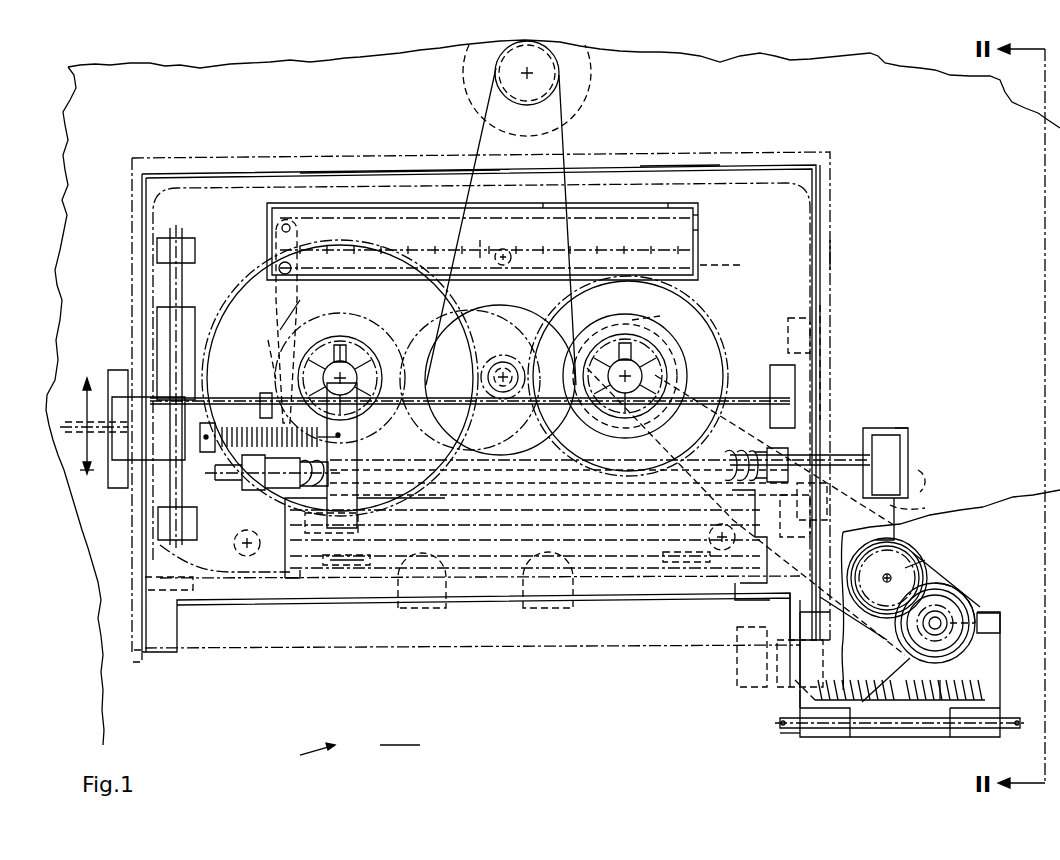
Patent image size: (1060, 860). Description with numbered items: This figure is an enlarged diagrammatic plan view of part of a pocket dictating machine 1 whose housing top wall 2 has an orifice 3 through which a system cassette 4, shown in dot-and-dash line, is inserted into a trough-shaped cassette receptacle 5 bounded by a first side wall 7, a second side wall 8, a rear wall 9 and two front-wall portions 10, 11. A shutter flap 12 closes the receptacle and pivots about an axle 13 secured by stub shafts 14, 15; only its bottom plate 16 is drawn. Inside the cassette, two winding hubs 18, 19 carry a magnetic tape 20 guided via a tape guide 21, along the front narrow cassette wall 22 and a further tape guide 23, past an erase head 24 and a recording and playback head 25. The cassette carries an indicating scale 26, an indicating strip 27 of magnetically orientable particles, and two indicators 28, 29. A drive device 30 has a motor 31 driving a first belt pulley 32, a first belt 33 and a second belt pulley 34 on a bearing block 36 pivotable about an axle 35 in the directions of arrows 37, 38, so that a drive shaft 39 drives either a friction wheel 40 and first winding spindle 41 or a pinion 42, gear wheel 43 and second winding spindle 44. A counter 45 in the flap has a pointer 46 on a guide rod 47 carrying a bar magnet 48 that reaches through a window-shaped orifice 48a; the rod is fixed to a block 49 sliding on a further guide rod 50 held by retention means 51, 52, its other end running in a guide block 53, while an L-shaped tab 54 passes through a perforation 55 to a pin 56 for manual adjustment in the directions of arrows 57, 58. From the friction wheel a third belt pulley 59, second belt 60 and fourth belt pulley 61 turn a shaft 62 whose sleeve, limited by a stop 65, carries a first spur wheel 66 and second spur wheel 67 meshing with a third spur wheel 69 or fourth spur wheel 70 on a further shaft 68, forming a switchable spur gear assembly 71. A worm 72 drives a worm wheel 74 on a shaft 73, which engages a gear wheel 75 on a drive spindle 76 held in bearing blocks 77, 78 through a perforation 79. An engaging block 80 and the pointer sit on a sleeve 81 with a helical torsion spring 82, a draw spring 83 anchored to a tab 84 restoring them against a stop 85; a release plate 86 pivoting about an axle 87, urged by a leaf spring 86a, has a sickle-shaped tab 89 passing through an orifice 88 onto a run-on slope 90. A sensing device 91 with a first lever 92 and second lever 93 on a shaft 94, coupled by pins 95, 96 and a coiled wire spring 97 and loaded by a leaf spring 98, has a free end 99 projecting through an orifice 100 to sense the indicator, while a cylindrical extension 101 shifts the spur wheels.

The pocket dictating machine 1 is at (307, 760).
The housing top wall 2 is at (400, 760).
The orifice 3 is at (774, 168).
The system cassette 4 is at (803, 184).
The cassette receptacle 5 is at (833, 207).
The first side wall 7 is at (134, 182).
The second side wall 8 is at (826, 255).
The rear wall 9 is at (676, 162).
The front-wall portion 10 is at (190, 605).
The front-wall portion 11 is at (783, 640).
The shutter flap 12 is at (182, 176).
The axle 13 is at (250, 650).
The stub shaft 14 is at (134, 655).
The stub shaft 15 is at (796, 688).
The bottom plate 16 is at (645, 166).
The winding hub 18 is at (365, 314).
The winding hub 19 is at (640, 312).
The magnetic tape 20 is at (478, 604).
The tape guide 21 is at (244, 558).
The front narrow cassette wall 22 is at (360, 580).
The tape guide 23 is at (716, 552).
The erase head 24 is at (400, 610).
The recording and playback head 25 is at (530, 610).
The indicating scale 26 is at (693, 229).
The indicating strip 27 is at (694, 218).
The indicator 28 is at (783, 515).
The indicator 29 is at (160, 547).
The drive device 30 is at (572, 134).
The motor 31 is at (465, 65).
The first belt pulley 32 is at (490, 80).
The first belt 33 is at (478, 140).
The second belt pulley 34 is at (417, 366).
The axle 35 is at (488, 256).
The bearing block 36 is at (510, 250).
The arrow 37 is at (569, 362).
The arrow 38 is at (432, 365).
The drive shaft 39 is at (515, 388).
The friction wheel 40 is at (506, 394).
The first winding spindle 41 is at (576, 325).
The pinion 42 is at (504, 352).
The gear wheel 43 is at (478, 413).
The second winding spindle 44 is at (372, 370).
The counter 45 is at (251, 418).
The pointer 46 is at (297, 307).
The guide rod 47 is at (420, 408).
The bar magnet 48 is at (292, 231).
The window-shaped orifice 48a is at (720, 257).
The block 49 is at (158, 322).
The further guide rod 50 is at (168, 272).
The retention means 51 is at (200, 532).
The retention means 52 is at (158, 246).
The guide block 53 is at (774, 362).
The tab 54 is at (133, 482).
The perforation 55 is at (126, 370).
The pin 56 is at (91, 412).
The arrow 57 is at (84, 488).
The arrow 58 is at (79, 412).
The third belt pulley 59 is at (596, 298).
The second belt 60 is at (695, 350).
The fourth belt pulley 61 is at (1000, 675).
The shaft 62 is at (950, 617).
The stop 65 is at (990, 634).
The first spur wheel 66 is at (886, 677).
The second spur wheel 67 is at (962, 597).
The further shaft 68 is at (887, 578).
The third spur wheel 69 is at (850, 632).
The fourth spur wheel 70 is at (935, 557).
The spur gear assembly 71 is at (956, 580).
The worm 72 is at (910, 567).
The shaft 73 is at (925, 480).
The worm wheel 74 is at (914, 513).
The gear wheel 75 is at (908, 450).
The drive spindle 76 is at (748, 448).
The bearing block 77 is at (244, 492).
The bearing block 78 is at (765, 388).
The perforation 79 is at (906, 434).
The engaging block 80 is at (358, 526).
The sleeve 81 is at (272, 352).
The helical torsion spring 82 is at (346, 432).
The draw spring 83 is at (248, 425).
The tab 84 is at (207, 422).
The stop 85 is at (264, 392).
The release plate 86 is at (284, 580).
The leaf spring 86a is at (612, 580).
The axle 87 is at (298, 580).
The orifice 88 is at (740, 590).
The sickle-shaped tab 89 is at (745, 628).
The run-on slope 90 is at (740, 686).
The sensing device 91 is at (795, 737).
The first lever 92 is at (836, 740).
The second lever 93 is at (980, 740).
The shaft 94 is at (1012, 732).
The pin 95 is at (862, 705).
The pin 96 is at (940, 705).
The coiled wire spring 97 is at (900, 705).
The leaf spring 98 is at (830, 374).
The free end 99 is at (828, 512).
The orifice 100 is at (600, 460).
The cylindrical extension 101 is at (980, 620).